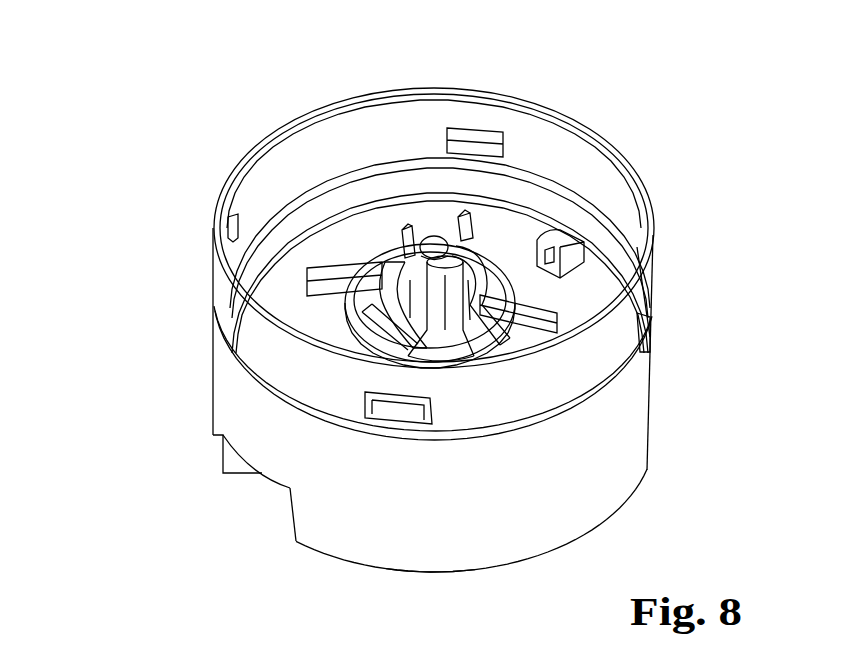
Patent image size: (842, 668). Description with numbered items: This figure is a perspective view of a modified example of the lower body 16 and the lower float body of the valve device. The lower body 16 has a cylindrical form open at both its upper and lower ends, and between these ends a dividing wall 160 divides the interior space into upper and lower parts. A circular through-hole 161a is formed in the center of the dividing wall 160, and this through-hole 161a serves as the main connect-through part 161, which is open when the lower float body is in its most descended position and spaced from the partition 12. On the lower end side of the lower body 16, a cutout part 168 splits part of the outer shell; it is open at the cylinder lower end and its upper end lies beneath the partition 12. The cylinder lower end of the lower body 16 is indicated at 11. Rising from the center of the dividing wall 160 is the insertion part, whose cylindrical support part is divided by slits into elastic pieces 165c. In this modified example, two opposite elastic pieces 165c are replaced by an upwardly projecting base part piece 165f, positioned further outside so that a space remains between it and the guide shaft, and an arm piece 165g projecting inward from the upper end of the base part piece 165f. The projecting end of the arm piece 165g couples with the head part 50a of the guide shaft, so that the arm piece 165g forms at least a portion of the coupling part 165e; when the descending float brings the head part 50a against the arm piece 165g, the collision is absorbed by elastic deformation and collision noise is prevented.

The partition 12 is at (654, 228).
The dividing wall 160 is at (583, 295).
The lower body 16 is at (570, 485).
The bottom edge 11 is at (407, 575).
The cutout part 168 is at (233, 468).
The main connect-through part 161 is at (367, 337).
The through-hole 161a is at (367, 337).
The elastic piece 165c is at (443, 325).
The head part 50a is at (423, 228).
The base part piece 165f is at (343, 302).
The arm piece 165g is at (380, 247).
The coupling part 165e is at (380, 247).